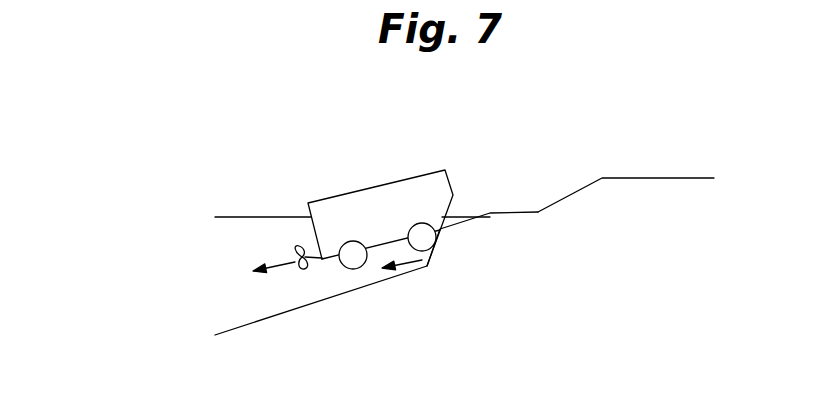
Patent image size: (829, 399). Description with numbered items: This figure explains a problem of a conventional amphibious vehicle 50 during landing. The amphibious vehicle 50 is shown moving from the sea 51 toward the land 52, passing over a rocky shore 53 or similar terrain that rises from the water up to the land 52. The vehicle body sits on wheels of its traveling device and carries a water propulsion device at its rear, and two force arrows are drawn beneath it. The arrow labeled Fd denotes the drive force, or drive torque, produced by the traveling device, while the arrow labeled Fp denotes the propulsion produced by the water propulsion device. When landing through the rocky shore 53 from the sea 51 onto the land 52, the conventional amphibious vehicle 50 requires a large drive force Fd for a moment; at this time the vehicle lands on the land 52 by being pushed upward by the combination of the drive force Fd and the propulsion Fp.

The amphibious vehicle 50 is at (361, 173).
The sea 51 is at (255, 250).
The land 52 is at (643, 222).
The rocky shore 53 is at (489, 193).
The propulsion Fp is at (277, 267).
The drive force Fd is at (405, 263).